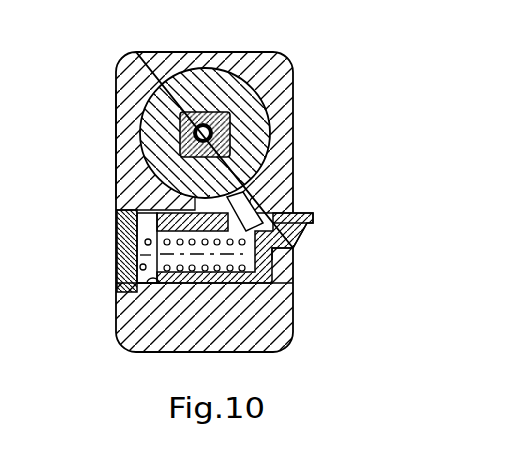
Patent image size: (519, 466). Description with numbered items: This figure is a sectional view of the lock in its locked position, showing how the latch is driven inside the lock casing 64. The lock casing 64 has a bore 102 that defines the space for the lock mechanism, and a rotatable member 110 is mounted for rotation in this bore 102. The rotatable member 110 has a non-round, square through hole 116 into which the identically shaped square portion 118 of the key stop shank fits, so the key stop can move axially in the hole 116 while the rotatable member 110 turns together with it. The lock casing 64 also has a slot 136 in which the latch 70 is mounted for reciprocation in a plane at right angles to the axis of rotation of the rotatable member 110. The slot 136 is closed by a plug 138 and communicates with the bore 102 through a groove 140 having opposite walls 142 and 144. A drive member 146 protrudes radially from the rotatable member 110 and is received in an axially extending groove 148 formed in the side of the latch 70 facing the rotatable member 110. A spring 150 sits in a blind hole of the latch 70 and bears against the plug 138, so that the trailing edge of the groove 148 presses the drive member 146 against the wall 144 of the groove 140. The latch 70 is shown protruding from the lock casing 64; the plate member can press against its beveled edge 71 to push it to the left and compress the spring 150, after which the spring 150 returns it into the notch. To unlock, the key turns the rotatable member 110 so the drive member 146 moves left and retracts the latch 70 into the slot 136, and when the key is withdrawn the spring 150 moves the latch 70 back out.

The lock casing 64 is at (116, 134).
The latch 70 is at (304, 235).
The beveled edge 71 is at (296, 247).
The bore 102 is at (158, 89).
The rotatable member 110 is at (255, 108).
The through hole 116 is at (230, 145).
The square portion 118 is at (198, 110).
The slot 136 is at (153, 280).
The plug 138 is at (117, 283).
The groove 140 is at (137, 254).
The wall 142 is at (195, 199).
The wall 144 is at (272, 213).
The drive member 146 is at (235, 250).
The axially extending groove 148 is at (308, 226).
The spring 150 is at (218, 270).